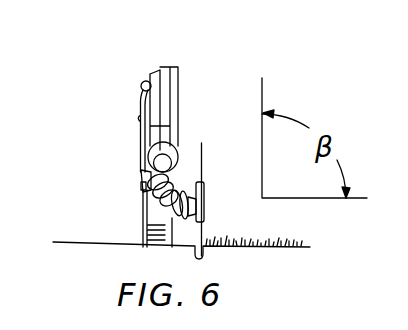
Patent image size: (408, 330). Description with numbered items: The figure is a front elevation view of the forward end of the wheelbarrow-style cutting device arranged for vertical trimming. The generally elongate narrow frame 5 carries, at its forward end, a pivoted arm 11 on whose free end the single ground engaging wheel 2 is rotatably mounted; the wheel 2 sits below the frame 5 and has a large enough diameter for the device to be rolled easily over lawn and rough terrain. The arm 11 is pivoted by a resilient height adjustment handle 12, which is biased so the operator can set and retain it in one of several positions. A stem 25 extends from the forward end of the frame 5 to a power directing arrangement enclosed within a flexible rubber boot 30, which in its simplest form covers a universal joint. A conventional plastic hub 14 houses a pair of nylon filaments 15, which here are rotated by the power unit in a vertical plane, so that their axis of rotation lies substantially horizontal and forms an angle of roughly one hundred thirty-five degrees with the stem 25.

The ground engaging wheel 2 is at (153, 220).
The frame 5 is at (166, 98).
The pivoted arm 11 is at (140, 186).
The height adjustment handle 12 is at (142, 97).
The plastic hub 14 is at (206, 203).
The nylon filaments 15 is at (202, 167).
The stem 25 is at (137, 174).
The flexible rubber boot 30 is at (141, 197).